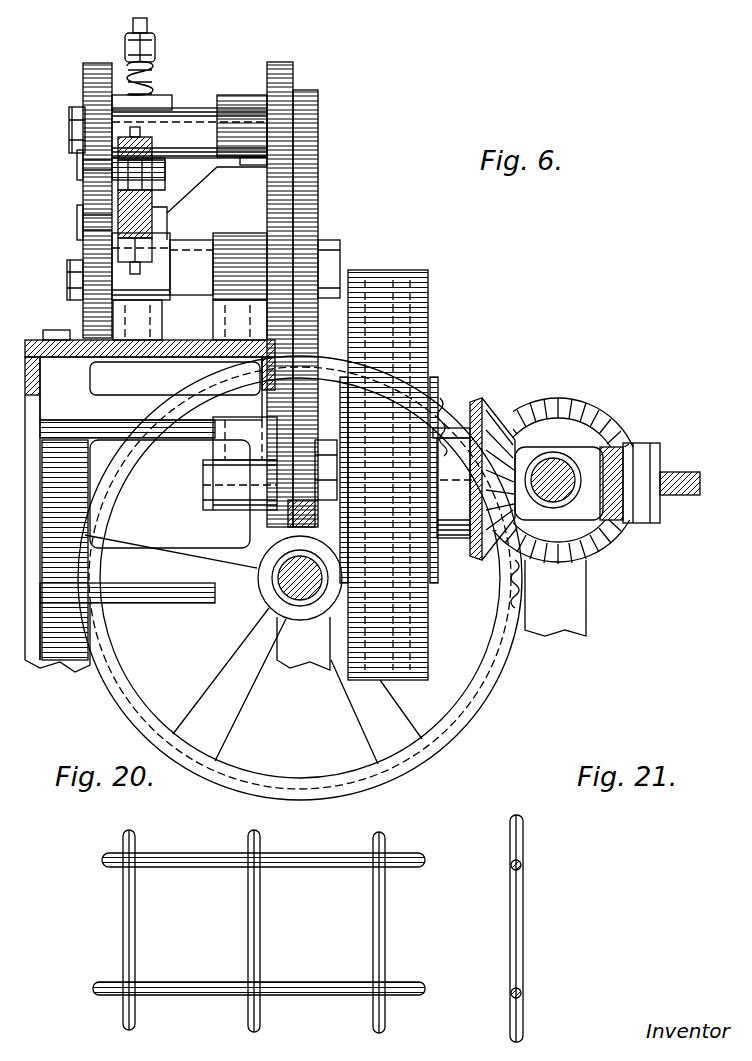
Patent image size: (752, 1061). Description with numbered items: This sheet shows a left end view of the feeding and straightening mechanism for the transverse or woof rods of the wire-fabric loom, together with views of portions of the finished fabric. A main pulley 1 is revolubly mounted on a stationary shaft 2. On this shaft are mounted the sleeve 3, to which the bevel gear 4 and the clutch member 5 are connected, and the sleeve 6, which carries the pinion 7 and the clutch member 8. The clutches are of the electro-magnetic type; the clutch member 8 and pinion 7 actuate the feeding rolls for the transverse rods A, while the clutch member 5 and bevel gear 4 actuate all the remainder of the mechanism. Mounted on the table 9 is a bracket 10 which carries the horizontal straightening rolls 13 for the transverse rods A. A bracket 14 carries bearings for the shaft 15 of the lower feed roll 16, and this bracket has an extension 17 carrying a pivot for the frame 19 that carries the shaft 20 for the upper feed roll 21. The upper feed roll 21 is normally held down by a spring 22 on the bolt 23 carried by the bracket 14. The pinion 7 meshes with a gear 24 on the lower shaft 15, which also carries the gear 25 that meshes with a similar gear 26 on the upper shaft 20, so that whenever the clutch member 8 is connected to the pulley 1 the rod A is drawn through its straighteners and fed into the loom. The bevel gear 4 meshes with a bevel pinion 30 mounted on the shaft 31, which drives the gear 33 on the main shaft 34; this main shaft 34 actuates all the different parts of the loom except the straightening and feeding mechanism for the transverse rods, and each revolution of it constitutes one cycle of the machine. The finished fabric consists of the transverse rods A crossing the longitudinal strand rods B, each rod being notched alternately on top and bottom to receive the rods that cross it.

In FIG. 6, the main pulley 1 is at (425, 330).
In FIG. 6, the stationary shaft 2 is at (203, 481).
In FIG. 6, the sleeve 3 is at (454, 483).
In FIG. 6, the bevel gear 4 is at (480, 410).
In FIG. 6, the clutch member 5 is at (438, 390).
In FIG. 6, the sleeve 6 is at (322, 500).
In FIG. 6, the pinion 7 is at (296, 505).
In FIG. 6, the clutch member 8 is at (341, 396).
In FIG. 6, the table 9 is at (198, 352).
In FIG. 6, the bracket 10 is at (170, 216).
In FIG. 6, the horizontal straightening rolls 13 is at (80, 222).
In FIG. 6, the bracket 14 is at (175, 292).
In FIG. 6, the shaft 15 is at (185, 264).
In FIG. 6, the lower feed roll 16 is at (88, 299).
In FIG. 6, the extension 17 is at (180, 122).
In FIG. 6, the frame 19 is at (232, 100).
In FIG. 6, the shaft 20 is at (69, 133).
In FIG. 6, the upper feed roll 21 is at (95, 88).
In FIG. 6, the spring 22 is at (152, 72).
In FIG. 6, the bolt 23 is at (148, 28).
In FIG. 6, the gear 24 is at (318, 205).
In FIG. 6, the gear 25 is at (280, 236).
In FIG. 6, the gear 26 is at (277, 157).
In FIG. 6, the bevel pinion 30 is at (562, 418).
In FIG. 6, the shaft 31 is at (556, 482).
In FIG. 6, the gear 33 is at (497, 676).
In FIG. 6, the main shaft 34 is at (292, 590).
In FIG. 20, the transverse rods A is at (120, 927).
In FIG. 21, the transverse rods A is at (510, 925).
In FIG. 20, the horizontal rod B is at (194, 855).
In FIG. 21, the horizontal rod B is at (524, 865).